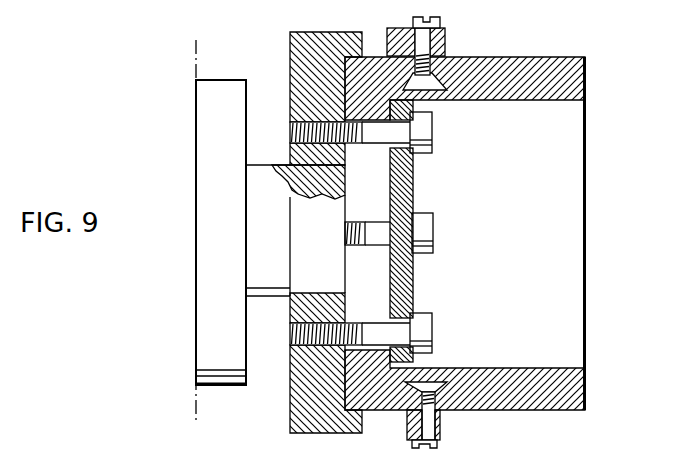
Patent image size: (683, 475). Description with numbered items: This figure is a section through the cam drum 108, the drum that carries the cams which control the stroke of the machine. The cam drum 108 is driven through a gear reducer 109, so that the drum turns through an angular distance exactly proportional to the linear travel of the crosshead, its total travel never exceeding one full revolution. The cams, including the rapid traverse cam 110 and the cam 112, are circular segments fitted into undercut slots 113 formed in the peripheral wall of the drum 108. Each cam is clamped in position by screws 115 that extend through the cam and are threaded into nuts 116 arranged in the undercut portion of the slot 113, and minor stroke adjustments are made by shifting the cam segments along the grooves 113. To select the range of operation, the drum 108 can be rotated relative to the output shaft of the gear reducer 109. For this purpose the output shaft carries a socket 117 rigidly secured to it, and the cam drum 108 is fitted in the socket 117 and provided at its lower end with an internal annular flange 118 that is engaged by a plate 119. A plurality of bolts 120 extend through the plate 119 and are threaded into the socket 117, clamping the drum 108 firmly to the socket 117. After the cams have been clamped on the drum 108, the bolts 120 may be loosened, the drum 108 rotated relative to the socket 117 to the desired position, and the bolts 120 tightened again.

The cam drum 108 is at (567, 326).
The gear reducer 109 is at (213, 132).
The rapid traverse cam 110 is at (443, 42).
The cam 112 is at (440, 428).
The undercut slot 113 is at (428, 382).
The screw 115 is at (433, 22).
The nut 116 is at (437, 90).
The socket 117 is at (307, 407).
The internal annular flange 118 is at (362, 282).
The plate 119 is at (403, 283).
The bolt 120 is at (434, 150).